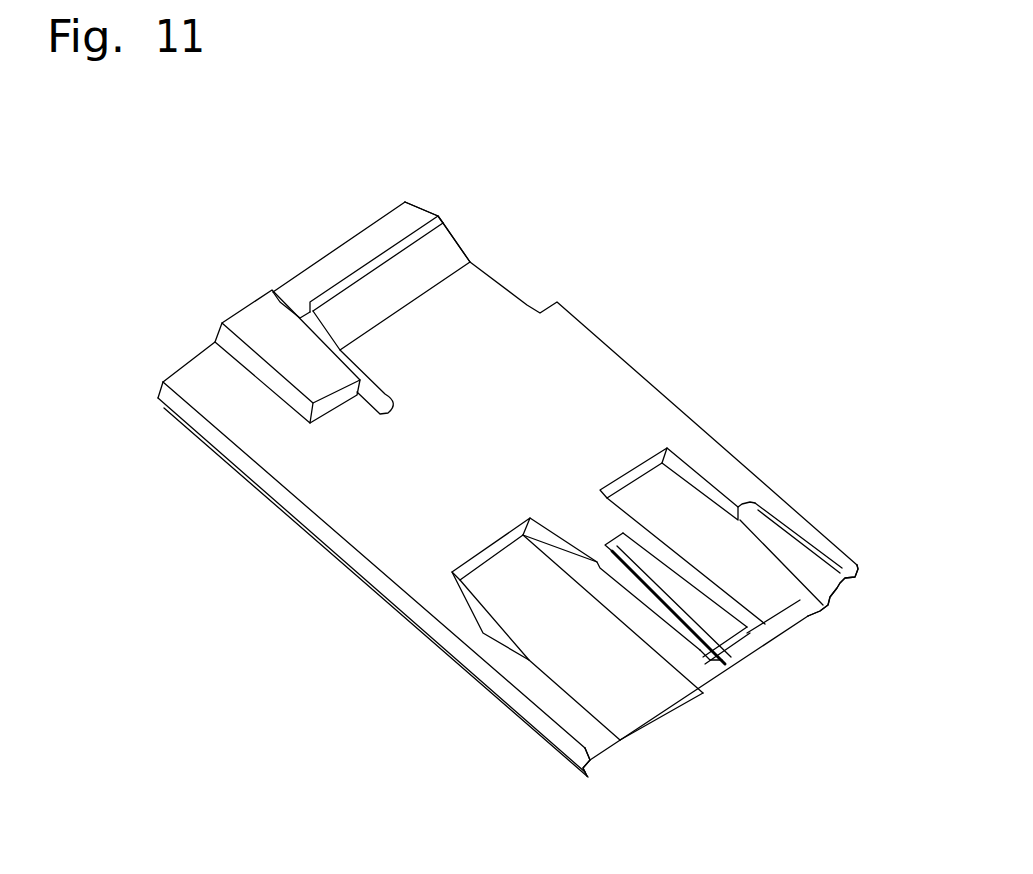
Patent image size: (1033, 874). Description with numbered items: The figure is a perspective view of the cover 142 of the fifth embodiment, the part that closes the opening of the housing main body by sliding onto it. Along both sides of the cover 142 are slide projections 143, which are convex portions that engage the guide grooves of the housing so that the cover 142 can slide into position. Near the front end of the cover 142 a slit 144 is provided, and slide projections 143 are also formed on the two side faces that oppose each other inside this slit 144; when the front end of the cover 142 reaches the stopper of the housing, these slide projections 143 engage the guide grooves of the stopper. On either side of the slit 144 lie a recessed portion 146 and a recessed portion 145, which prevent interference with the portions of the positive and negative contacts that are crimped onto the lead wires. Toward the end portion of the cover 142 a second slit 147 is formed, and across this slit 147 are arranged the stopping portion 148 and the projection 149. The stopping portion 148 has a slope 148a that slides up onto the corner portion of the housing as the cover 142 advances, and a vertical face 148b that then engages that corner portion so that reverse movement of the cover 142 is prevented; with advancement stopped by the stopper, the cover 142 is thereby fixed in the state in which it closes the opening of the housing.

The cover 142 is at (720, 300).
The slide projection 143 is at (850, 552).
The slit 144 is at (730, 667).
The recessed portion 145 is at (627, 690).
The recessed portion 146 is at (737, 572).
The slit 147 is at (383, 393).
The stopping portion 148 is at (460, 235).
The slope 148a is at (365, 298).
The vertical face 148b is at (318, 293).
The projection 149 is at (263, 323).